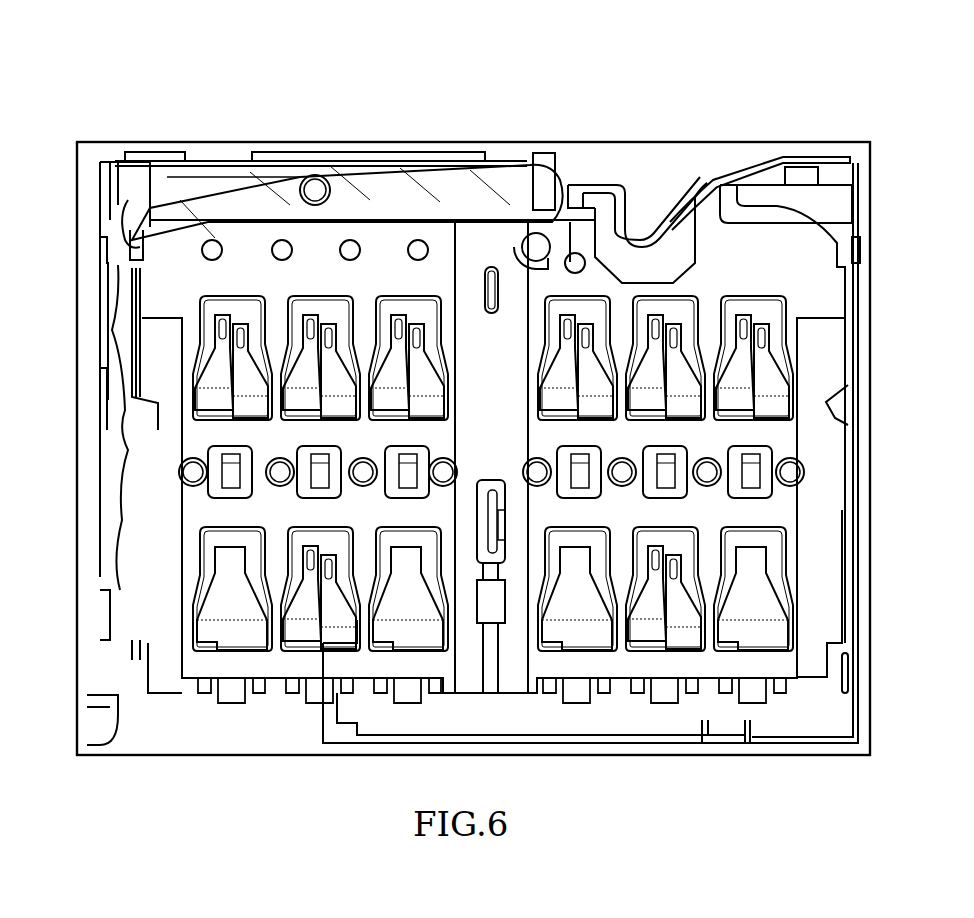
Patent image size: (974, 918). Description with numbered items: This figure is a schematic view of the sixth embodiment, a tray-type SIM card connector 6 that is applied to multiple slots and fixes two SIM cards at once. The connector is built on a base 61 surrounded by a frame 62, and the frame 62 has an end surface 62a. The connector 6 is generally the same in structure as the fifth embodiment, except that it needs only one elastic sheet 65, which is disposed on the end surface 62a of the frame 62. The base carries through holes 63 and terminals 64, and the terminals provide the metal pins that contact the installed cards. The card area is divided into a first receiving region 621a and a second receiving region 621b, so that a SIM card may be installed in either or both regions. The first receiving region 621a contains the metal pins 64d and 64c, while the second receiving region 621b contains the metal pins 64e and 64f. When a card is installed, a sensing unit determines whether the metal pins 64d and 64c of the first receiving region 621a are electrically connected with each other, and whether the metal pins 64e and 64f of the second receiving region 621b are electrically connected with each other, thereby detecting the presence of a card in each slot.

The SIM card connector 6 is at (104, 71).
The base 61 is at (788, 270).
The frame 62 is at (838, 235).
The end surface 62a is at (752, 185).
The through hole 63 is at (775, 315).
The terminal 64 is at (760, 555).
The metal pin 64c is at (648, 620).
The metal pin 64d is at (682, 618).
The metal pin 64e is at (300, 607).
The metal pin 64f is at (337, 635).
The elastic sheet 65 is at (752, 222).
The first receiving region 621a is at (627, 178).
The second receiving region 621b is at (235, 247).